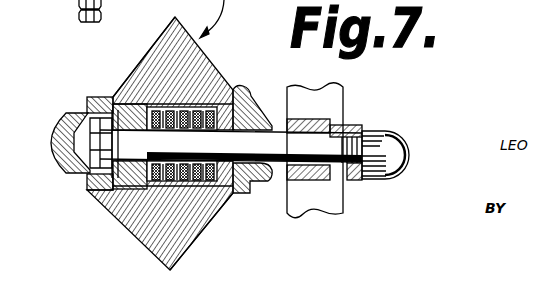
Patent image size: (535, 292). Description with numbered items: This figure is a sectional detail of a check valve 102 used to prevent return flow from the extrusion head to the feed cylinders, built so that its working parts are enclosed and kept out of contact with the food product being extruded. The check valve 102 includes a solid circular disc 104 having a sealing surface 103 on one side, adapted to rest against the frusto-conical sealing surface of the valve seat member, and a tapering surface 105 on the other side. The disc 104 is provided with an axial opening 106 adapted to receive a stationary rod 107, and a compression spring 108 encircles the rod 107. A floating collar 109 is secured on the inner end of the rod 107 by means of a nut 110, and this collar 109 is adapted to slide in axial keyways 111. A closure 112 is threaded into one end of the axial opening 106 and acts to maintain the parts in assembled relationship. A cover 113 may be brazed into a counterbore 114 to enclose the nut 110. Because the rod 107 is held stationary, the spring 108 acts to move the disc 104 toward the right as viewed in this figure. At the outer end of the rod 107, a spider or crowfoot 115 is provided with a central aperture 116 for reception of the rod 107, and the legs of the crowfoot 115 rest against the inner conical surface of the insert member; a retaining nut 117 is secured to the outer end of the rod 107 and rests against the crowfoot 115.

The check valve 102 is at (108, 81).
The sealing surface 103 is at (190, 255).
The solid circular disc 104 is at (192, 59).
The tapering surface 105 is at (134, 243).
The axial opening 106 is at (230, 102).
The stationary rod 107 is at (249, 140).
The compression spring 108 is at (160, 128).
The floating collar 109 is at (88, 181).
The nut 110 is at (98, 143).
The axial keyways 111 is at (146, 193).
The closure 112 is at (232, 191).
The cover 113 is at (66, 118).
The counterbore 114 is at (100, 97).
The spider or crowfoot 115 is at (333, 97).
The central aperture 116 is at (336, 132).
The retaining nut 117 is at (348, 178).